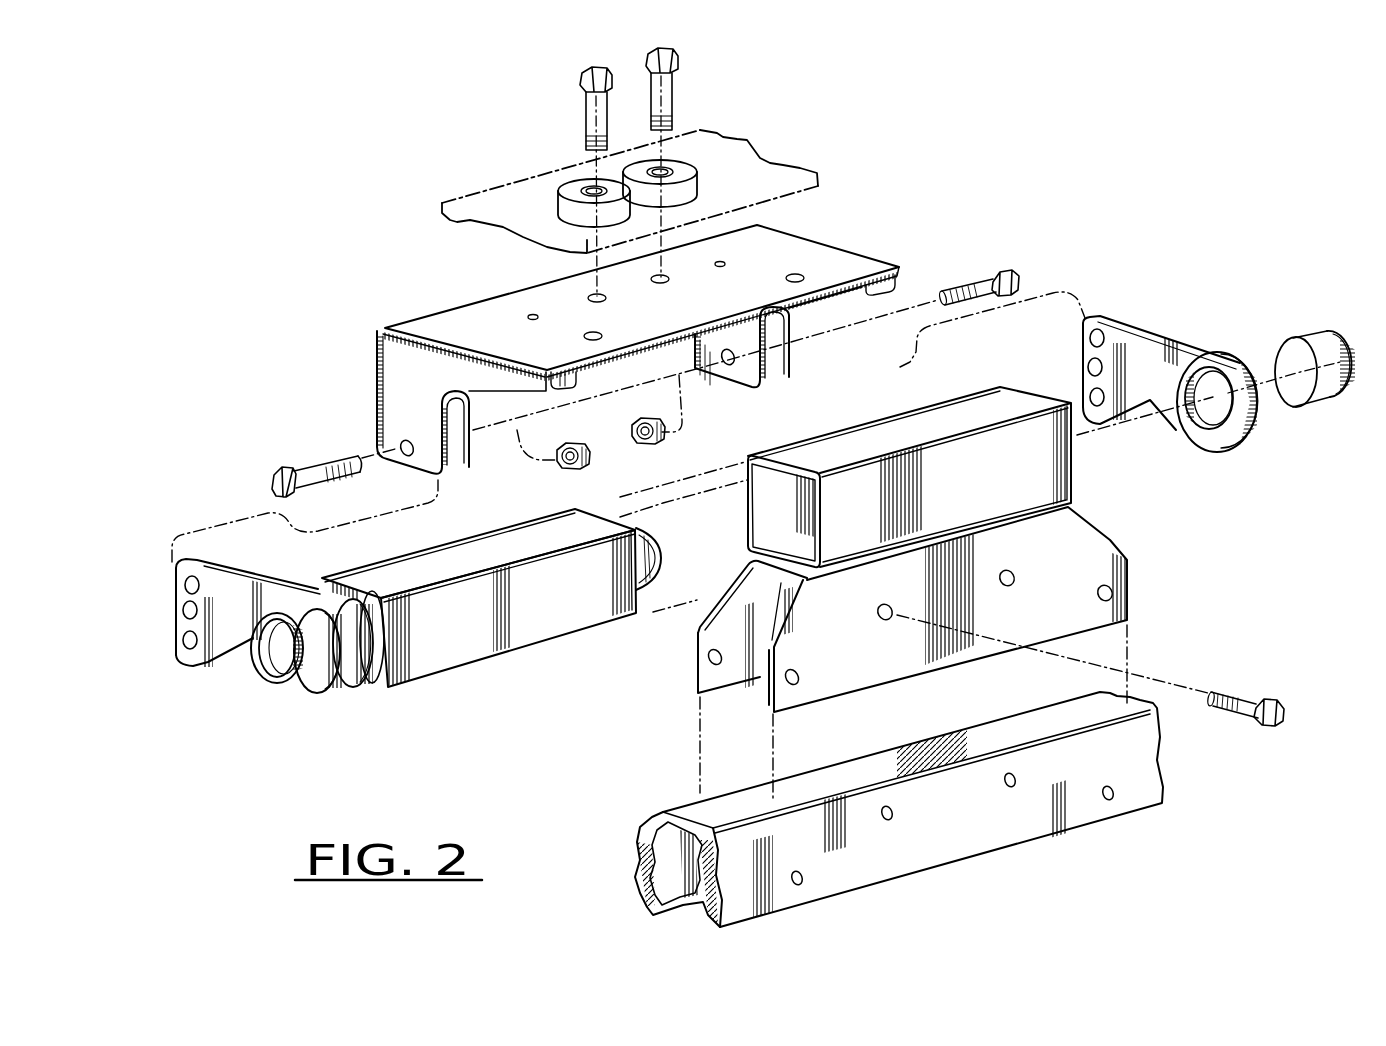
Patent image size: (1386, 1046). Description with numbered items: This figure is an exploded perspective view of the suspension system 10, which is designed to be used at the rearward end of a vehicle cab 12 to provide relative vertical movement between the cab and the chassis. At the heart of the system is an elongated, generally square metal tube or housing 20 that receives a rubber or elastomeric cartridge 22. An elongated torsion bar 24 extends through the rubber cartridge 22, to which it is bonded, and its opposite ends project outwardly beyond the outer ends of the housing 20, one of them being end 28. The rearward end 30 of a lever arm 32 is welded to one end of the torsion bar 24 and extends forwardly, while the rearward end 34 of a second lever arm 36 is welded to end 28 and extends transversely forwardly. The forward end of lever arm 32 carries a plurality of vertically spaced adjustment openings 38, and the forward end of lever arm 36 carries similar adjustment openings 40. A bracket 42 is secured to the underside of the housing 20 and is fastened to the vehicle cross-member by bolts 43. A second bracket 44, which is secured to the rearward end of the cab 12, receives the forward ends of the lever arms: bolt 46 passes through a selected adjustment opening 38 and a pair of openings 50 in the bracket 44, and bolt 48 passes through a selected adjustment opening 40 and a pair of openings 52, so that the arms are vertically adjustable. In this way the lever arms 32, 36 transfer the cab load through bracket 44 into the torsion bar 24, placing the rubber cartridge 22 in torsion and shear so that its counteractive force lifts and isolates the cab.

The suspension system 10 is at (936, 226).
The vehicle cab 12 is at (753, 167).
The tube or housing 20 is at (1037, 471).
The rubber cartridge 22 is at (542, 603).
The torsion bar 24 is at (655, 548).
The end of torsion bar 28 is at (280, 657).
The rearward end of lever arm 30 is at (1236, 424).
The lever arm 32 is at (1145, 314).
The rearward end of lever arm 34 is at (330, 685).
The lever arm 36 is at (278, 565).
The adjustment openings 38 is at (1088, 341).
The adjustment openings 40 is at (184, 587).
The bracket 42 is at (1094, 567).
The bolts 43 is at (1245, 696).
The bracket 44 is at (424, 302).
The bolt 46 is at (1004, 271).
The bolt 48 is at (312, 462).
The openings 50 is at (728, 366).
The openings 52 is at (405, 458).